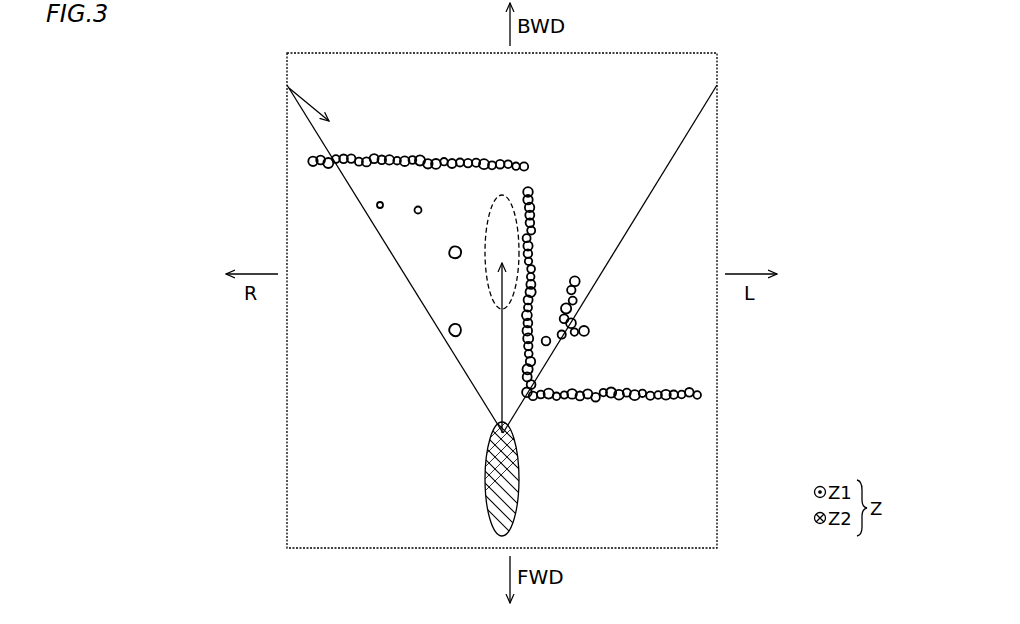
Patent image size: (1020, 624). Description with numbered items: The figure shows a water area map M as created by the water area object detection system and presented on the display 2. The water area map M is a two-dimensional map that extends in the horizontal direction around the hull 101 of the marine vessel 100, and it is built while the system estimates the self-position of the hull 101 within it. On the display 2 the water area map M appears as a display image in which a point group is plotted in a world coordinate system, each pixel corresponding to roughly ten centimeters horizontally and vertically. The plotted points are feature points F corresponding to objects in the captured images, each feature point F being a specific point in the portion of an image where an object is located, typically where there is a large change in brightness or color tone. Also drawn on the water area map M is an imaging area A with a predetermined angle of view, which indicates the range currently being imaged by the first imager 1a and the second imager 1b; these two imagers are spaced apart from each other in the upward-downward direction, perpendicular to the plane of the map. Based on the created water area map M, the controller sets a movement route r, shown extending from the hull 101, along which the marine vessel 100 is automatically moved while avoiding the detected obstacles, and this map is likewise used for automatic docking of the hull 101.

The water area map M is at (257, 61).
The imaging area A is at (289, 90).
The display 2 is at (718, 111).
The movement route r is at (500, 356).
The first imager 1a is at (472, 473).
The second imager 1b is at (497, 437).
The hull 101 is at (439, 514).
The marine vessel 100 is at (491, 493).
The feature point F is at (703, 392).